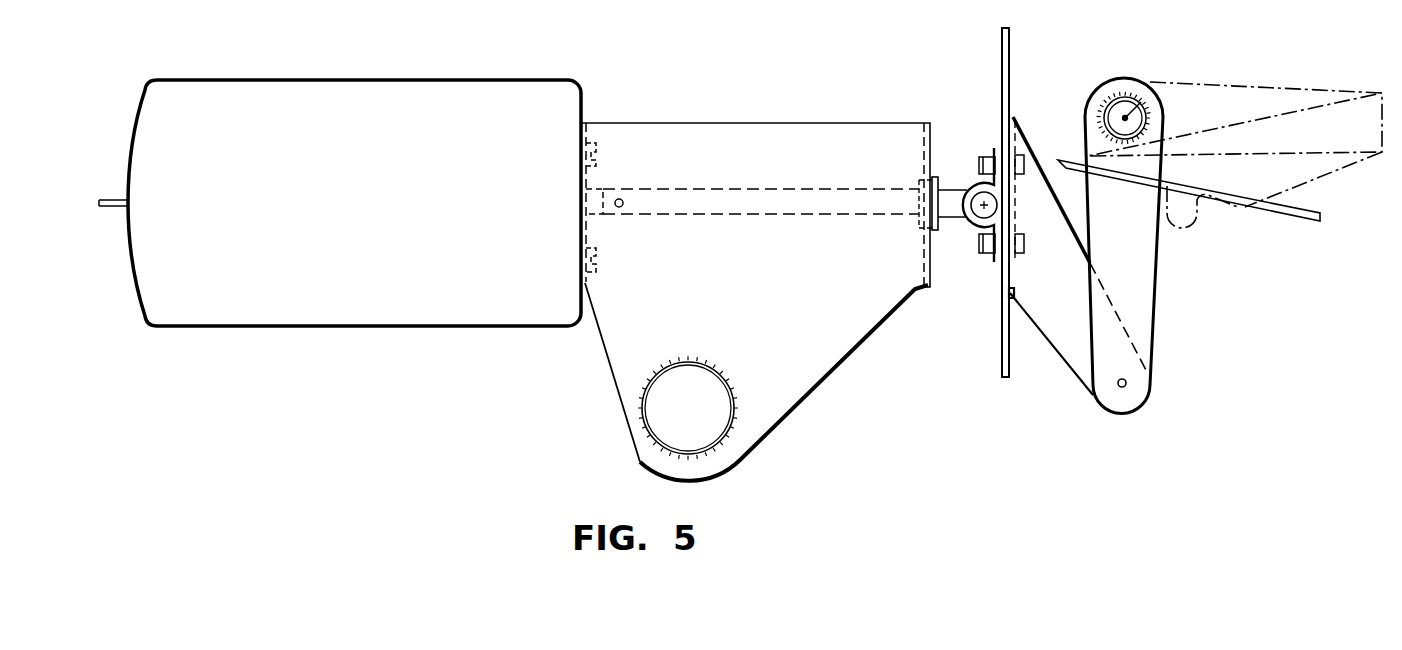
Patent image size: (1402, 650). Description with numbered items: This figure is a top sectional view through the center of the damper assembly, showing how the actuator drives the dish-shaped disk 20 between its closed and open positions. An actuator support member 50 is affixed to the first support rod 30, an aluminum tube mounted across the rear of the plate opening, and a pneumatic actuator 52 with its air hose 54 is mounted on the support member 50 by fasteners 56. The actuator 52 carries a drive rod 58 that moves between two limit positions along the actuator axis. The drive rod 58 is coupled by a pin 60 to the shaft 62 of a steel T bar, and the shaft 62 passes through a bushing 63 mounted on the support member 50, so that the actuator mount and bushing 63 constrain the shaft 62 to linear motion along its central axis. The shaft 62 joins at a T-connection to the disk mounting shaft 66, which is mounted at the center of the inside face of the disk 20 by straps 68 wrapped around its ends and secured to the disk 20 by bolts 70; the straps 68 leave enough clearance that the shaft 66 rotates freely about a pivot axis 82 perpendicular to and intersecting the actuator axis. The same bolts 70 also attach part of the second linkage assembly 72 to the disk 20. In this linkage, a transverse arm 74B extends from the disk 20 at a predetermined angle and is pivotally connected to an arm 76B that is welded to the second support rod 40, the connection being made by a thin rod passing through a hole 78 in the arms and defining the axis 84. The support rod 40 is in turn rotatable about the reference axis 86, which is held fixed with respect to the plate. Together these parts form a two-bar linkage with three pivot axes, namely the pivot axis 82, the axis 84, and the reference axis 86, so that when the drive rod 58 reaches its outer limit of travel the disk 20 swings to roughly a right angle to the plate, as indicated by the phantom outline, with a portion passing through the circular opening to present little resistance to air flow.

The dish-shaped disk 20 is at (1012, 38).
The first support rod 30 is at (667, 465).
The second support rod 40 is at (1118, 95).
The actuator support member 50 is at (703, 140).
The pneumatic actuator 52 is at (418, 93).
The air hose 54 is at (118, 208).
The fasteners 56 is at (595, 152).
The drive rod 58 is at (592, 189).
The pin 60 is at (620, 209).
The shaft 62 is at (750, 196).
The bushing 63 is at (940, 181).
The disk mounting shaft 66 is at (984, 205).
The straps 68 is at (972, 178).
The bolts 70 is at (990, 254).
The second linkage assembly 72 is at (1073, 383).
The transverse arm 74B is at (1047, 174).
The arm 76B is at (1140, 337).
The hole 78 is at (1125, 392).
The pivot axis 82 is at (984, 205).
The axis of rod 84 is at (1128, 383).
The reference axis 86 is at (1143, 99).